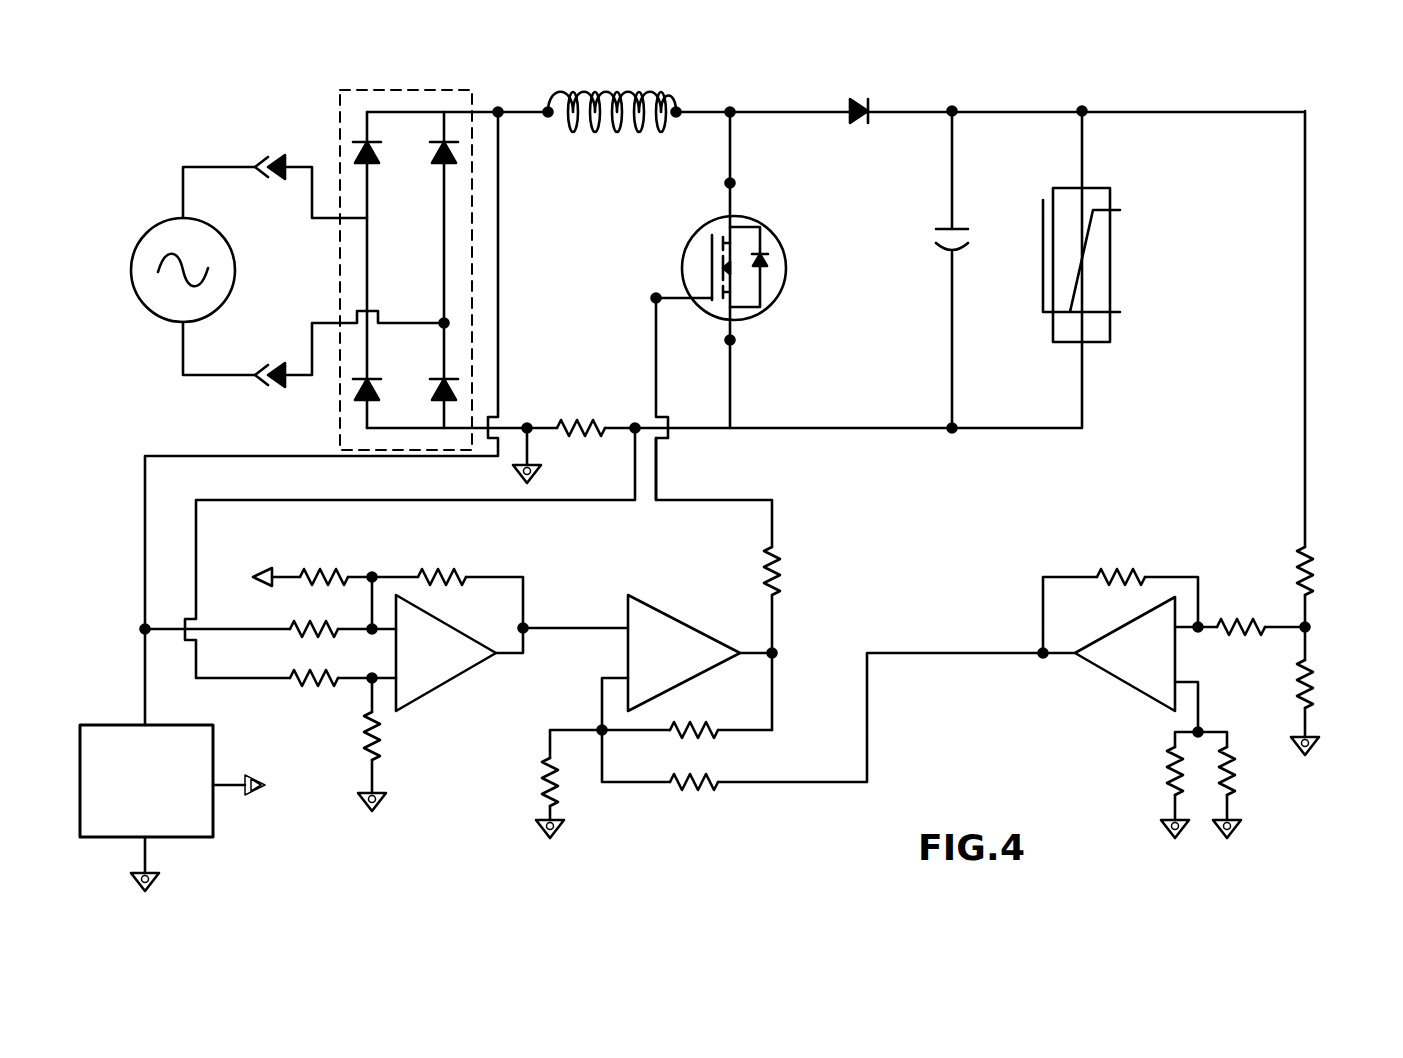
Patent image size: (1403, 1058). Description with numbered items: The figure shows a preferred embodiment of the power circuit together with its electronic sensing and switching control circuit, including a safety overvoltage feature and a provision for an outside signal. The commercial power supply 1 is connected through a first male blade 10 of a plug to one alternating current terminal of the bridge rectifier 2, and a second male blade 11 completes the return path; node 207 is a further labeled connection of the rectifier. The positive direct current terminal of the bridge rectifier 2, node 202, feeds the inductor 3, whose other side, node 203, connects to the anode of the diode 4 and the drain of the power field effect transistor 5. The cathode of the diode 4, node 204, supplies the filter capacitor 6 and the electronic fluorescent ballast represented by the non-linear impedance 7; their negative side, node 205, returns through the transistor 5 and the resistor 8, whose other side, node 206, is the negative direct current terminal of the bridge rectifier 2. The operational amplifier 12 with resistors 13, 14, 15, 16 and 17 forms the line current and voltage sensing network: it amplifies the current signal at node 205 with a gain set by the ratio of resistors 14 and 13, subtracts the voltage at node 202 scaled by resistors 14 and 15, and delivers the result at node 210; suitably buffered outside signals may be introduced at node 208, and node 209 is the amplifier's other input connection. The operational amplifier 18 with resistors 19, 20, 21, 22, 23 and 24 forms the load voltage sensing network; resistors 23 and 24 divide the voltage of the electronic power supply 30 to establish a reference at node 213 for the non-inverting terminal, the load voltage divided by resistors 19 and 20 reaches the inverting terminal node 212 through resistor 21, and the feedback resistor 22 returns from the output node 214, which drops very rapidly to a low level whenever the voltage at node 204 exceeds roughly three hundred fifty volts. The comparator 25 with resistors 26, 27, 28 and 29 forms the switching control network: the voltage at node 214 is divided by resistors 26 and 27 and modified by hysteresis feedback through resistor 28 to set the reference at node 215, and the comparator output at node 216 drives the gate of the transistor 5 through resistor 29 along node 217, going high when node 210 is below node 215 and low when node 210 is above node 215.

The power supply 1 is at (163, 323).
The bridge rectifier 2 is at (420, 89).
The inductor 3 is at (620, 98).
The diode 4 is at (870, 103).
The power field effect transistor 5 is at (786, 246).
The filter capacitor 6 is at (958, 236).
The non-linear impedance 7 is at (1110, 240).
The resistor 8 is at (596, 418).
The first male blade 10 is at (272, 158).
The second male blade 11 is at (272, 386).
The operational amplifier 12 is at (462, 690).
The resistor 13 is at (313, 570).
The resistor 14 is at (450, 570).
The resistor 15 is at (298, 634).
The resistor 16 is at (313, 688).
The resistor 17 is at (380, 740).
The operational amplifier 18 is at (1130, 690).
The resistor 19 is at (1298, 548).
The resistor 20 is at (1300, 706).
The resistor 21 is at (1258, 622).
The resistor 22 is at (1110, 570).
The resistor 23 is at (1165, 773).
The resistor 24 is at (1236, 786).
The comparator 25 is at (686, 626).
The resistor 26 is at (700, 790).
The resistor 27 is at (540, 796).
The resistor 28 is at (706, 738).
The resistor 29 is at (782, 580).
The electronic power supply 30 is at (218, 816).
The node 202 is at (502, 96).
The node 203 is at (732, 96).
The node 204 is at (951, 95).
The node 205 is at (764, 465).
The node 206 is at (526, 411).
The circuit node 207 is at (415, 307).
The node 208 is at (369, 560).
The circuit node 209 is at (364, 662).
The node 210 is at (551, 613).
The node 212 is at (1211, 647).
The node 213 is at (1225, 718).
The node 214 is at (1036, 674).
The node 215 is at (573, 714).
The circuit node 216 is at (803, 675).
The circuit node 217 is at (697, 401).